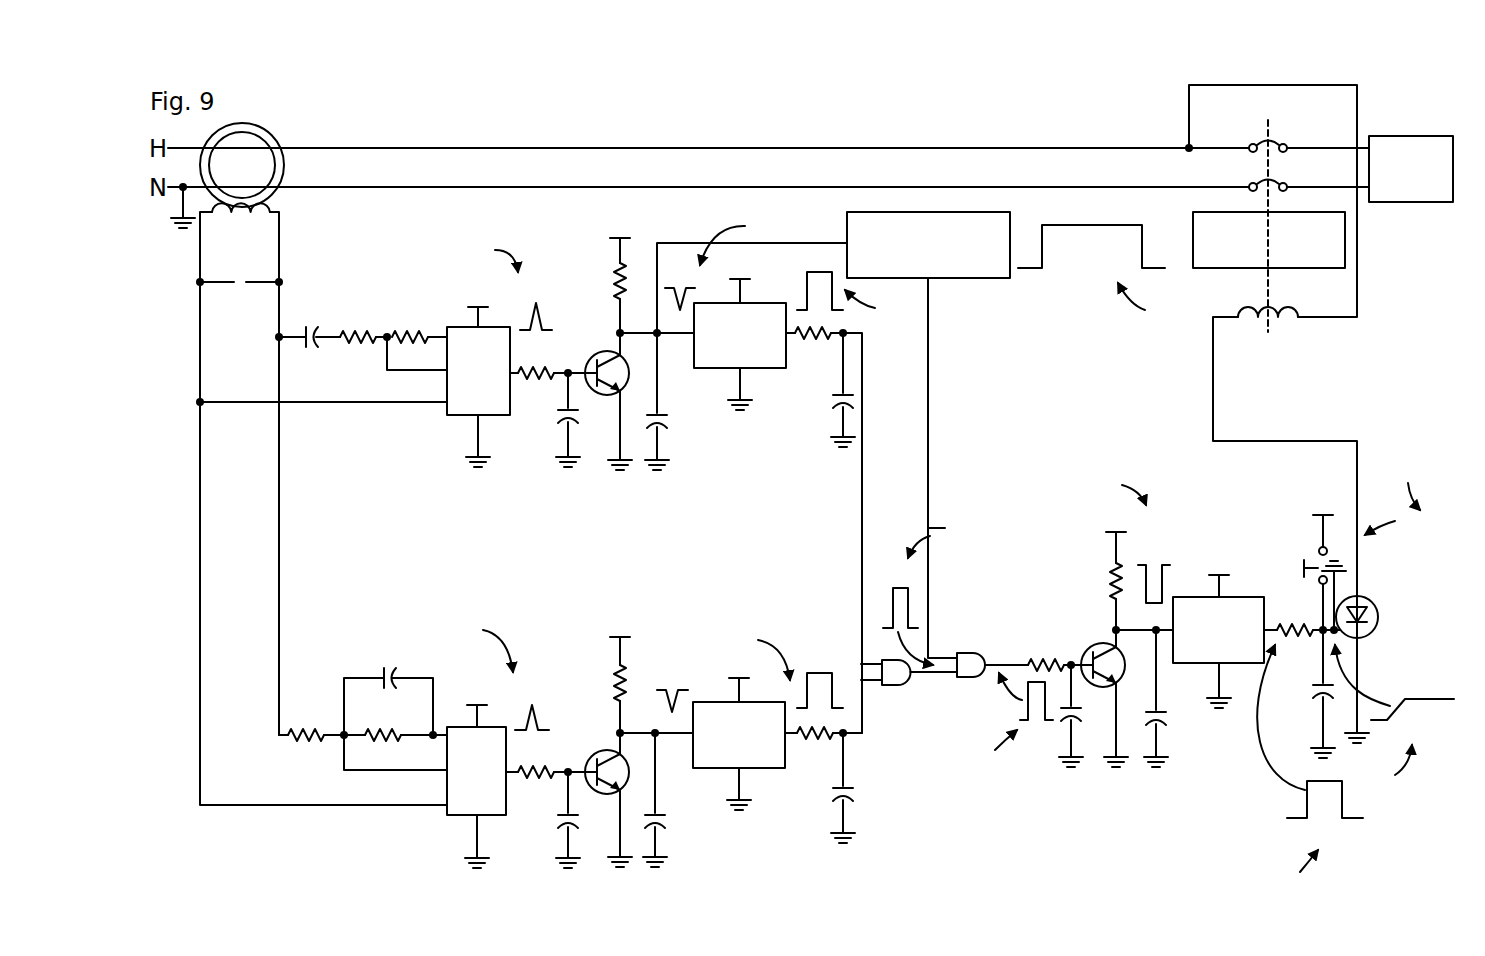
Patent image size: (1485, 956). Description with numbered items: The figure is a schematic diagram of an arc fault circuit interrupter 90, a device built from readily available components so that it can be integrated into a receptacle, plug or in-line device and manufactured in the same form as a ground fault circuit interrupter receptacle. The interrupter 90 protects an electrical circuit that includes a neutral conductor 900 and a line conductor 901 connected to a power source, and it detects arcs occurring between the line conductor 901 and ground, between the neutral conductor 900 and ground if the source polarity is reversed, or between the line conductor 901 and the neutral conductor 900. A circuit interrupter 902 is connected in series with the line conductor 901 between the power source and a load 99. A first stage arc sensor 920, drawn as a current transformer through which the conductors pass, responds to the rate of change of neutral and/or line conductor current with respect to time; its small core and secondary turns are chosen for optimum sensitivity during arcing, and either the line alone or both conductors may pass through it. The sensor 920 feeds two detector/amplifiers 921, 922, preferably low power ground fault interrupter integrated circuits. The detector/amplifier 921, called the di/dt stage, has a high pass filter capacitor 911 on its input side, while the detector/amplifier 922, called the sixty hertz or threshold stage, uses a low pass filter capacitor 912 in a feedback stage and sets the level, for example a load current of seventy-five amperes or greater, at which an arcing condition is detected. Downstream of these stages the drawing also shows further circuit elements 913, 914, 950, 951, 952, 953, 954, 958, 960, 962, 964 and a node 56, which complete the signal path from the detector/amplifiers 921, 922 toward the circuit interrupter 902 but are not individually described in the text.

The arc fault circuit interrupter 90 is at (777, 118).
The load 99 is at (1410, 136).
The neutral conductor 900 is at (330, 187).
The line conductor 901 is at (330, 148).
The circuit interrupter 902 is at (1278, 135).
The high pass filter capacitor 911 is at (316, 324).
The low pass filter capacitor 912 is at (394, 665).
The AND gate 913 is at (893, 686).
The AND gate 914 is at (975, 678).
The first stage arc sensor 920 is at (228, 215).
The detector/amplifier 921 is at (460, 416).
The detector/amplifier 922 is at (457, 816).
The pulse widener 950 is at (712, 369).
The pulse widener 951 is at (708, 769).
The dimmer delay timer 952 is at (958, 279).
The SCR driver 953 is at (1196, 663).
The SCR 954 is at (1379, 617).
The capacitor 958 is at (1313, 697).
The trip coil 960 is at (1280, 328).
The resistor 962 is at (610, 687).
The capacitor 964 is at (670, 828).
The SCR gate node 56 is at (1285, 622).